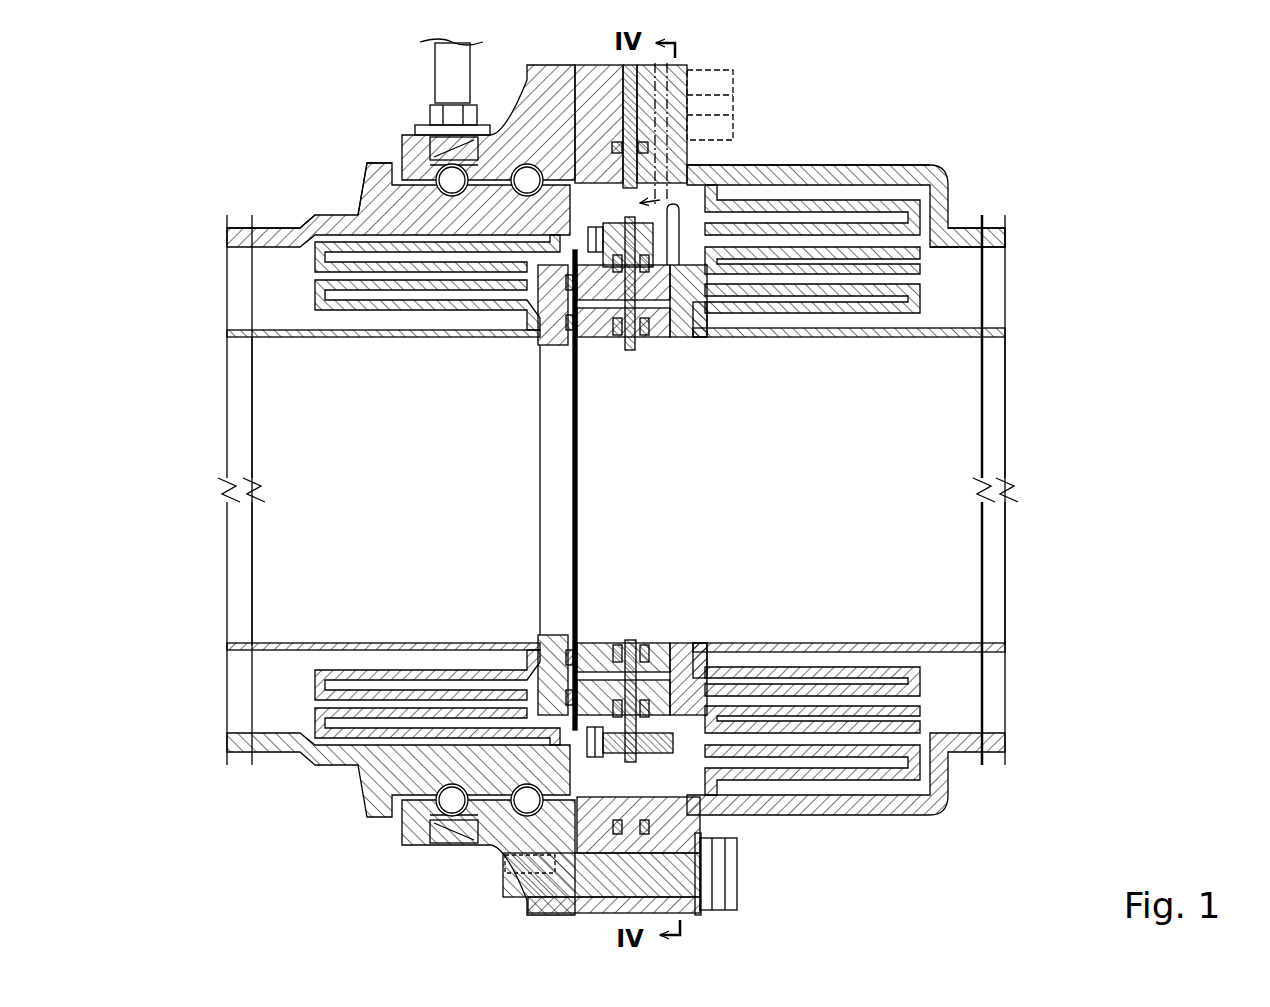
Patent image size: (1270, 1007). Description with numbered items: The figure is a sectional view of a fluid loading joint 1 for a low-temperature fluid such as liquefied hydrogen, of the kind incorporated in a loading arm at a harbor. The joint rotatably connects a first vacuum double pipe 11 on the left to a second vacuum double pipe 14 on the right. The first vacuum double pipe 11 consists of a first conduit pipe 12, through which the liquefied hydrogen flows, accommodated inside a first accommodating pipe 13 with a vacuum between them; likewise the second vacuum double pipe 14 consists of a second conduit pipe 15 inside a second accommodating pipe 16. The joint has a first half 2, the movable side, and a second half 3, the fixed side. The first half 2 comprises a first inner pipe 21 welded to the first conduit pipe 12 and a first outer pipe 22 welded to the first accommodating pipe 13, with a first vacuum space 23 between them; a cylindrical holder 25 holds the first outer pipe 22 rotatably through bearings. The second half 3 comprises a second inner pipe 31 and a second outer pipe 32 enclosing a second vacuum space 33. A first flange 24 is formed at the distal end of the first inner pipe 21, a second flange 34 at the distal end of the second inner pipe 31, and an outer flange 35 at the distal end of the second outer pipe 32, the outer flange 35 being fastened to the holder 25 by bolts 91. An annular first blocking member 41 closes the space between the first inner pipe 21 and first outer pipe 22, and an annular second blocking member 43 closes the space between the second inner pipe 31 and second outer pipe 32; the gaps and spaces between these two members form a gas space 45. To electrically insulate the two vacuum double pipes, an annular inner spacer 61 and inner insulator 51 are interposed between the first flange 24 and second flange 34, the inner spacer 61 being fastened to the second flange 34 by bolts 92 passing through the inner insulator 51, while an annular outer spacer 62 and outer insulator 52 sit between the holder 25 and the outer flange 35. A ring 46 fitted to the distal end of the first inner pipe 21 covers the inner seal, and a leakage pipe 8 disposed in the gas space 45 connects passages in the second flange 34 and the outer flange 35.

The fluid loading joint 1 is at (882, 106).
The first half 2 is at (325, 212).
The second half 3 is at (906, 163).
The leakage pipe 8 is at (675, 243).
The first vacuum double pipe 11 is at (240, 222).
The first conduit pipe 12 is at (240, 325).
The first accommodating pipe 13 is at (250, 238).
The second vacuum double pipe 14 is at (990, 226).
The second conduit pipe 15 is at (990, 325).
The second accommodating pipe 16 is at (990, 238).
The first inner pipe 21 is at (400, 337).
The first outer pipe 22 is at (380, 183).
The first vacuum space 23 is at (282, 302).
The first flange 24 is at (548, 345).
The holder 25 is at (540, 118).
The second inner pipe 31 is at (865, 337).
The second outer pipe 32 is at (820, 175).
The second vacuum space 33 is at (952, 292).
The second flange 34 is at (682, 340).
The outer flange 35 is at (672, 120).
The first blocking member 41 is at (445, 312).
The second blocking member 43 is at (815, 312).
The gas space 45 is at (640, 212).
The ring 46 is at (600, 733).
The inner insulator 51 is at (645, 340).
The outer insulator 52 is at (655, 95).
The inner spacer 61 is at (588, 345).
The outer spacer 62 is at (592, 68).
The bolts 91 is at (737, 880).
The bolts 92 is at (660, 700).